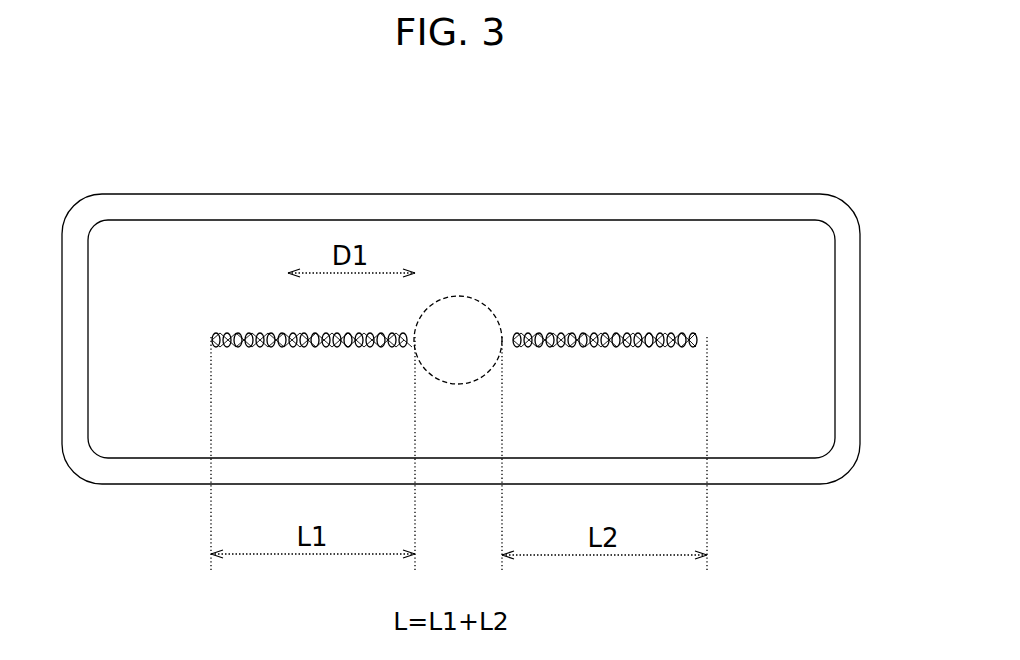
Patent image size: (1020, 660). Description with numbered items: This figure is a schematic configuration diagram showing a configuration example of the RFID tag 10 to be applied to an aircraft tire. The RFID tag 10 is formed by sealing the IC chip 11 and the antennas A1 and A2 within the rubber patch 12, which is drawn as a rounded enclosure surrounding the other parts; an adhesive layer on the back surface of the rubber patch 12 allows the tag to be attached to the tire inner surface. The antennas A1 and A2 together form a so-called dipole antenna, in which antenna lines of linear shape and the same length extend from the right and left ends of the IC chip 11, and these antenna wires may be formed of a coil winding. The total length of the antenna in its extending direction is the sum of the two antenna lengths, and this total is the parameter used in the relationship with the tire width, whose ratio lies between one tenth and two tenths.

The RFID tag 10 is at (348, 194).
The IC chip 11 is at (460, 355).
The rubber patch 12 is at (625, 250).
The antenna A1 is at (320, 348).
The antenna A2 is at (611, 350).